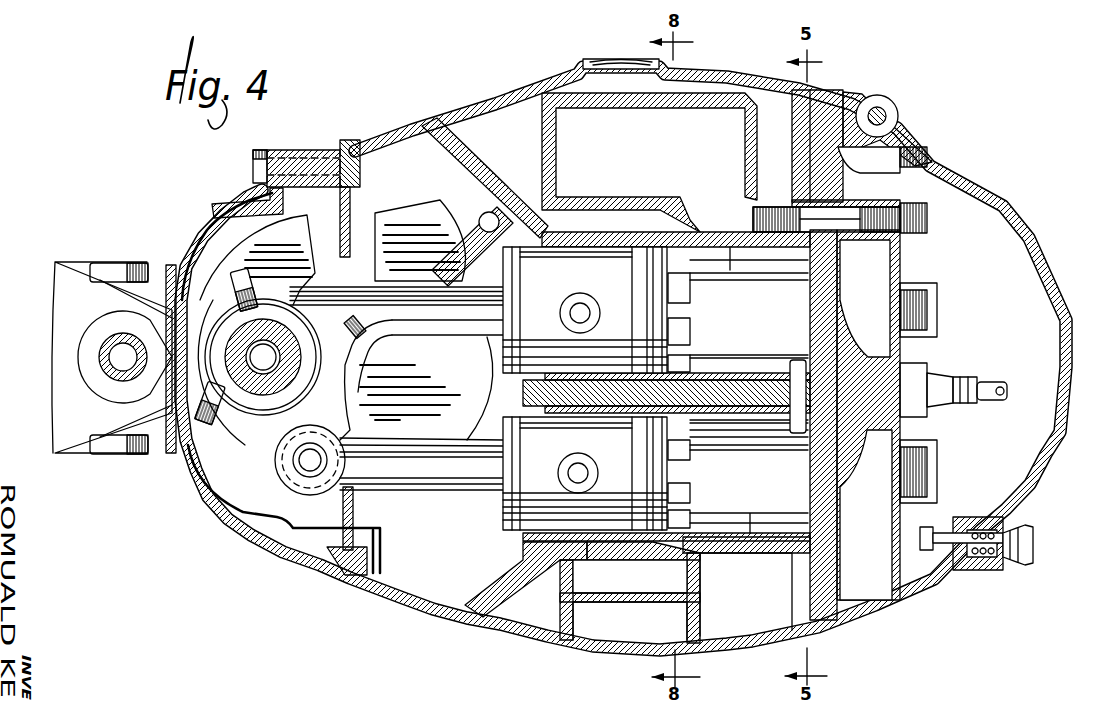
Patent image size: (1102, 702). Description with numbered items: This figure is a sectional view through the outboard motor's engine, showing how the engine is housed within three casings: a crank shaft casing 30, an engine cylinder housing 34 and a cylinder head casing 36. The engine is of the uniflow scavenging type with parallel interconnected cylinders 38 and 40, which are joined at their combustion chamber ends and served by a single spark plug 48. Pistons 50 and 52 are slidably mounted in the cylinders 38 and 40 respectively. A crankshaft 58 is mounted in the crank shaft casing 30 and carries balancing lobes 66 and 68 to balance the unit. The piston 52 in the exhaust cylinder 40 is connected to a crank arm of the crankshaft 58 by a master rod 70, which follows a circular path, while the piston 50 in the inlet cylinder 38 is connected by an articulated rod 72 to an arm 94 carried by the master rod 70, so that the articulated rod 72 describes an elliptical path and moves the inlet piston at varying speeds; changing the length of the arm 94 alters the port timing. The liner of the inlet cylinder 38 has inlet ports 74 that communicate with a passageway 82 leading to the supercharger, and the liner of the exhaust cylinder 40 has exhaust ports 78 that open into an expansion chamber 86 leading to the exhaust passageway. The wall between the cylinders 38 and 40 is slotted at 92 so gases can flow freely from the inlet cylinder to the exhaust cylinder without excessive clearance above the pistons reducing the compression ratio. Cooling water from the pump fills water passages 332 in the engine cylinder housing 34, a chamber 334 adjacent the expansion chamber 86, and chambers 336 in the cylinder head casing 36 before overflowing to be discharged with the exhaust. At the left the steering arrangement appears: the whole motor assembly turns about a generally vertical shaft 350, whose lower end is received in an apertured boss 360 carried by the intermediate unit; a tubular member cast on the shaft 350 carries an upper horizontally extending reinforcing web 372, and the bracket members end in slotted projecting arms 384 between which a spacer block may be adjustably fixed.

The crank shaft casing 30 is at (240, 520).
The engine cylinder housing 34 is at (537, 640).
The cylinder head casing 36 is at (880, 370).
The cylinder 38 is at (753, 517).
The cylinder 40 is at (733, 217).
The spark plug 48 is at (950, 375).
The piston 50 is at (533, 480).
The piston 52 is at (647, 310).
The crankshaft 58 is at (215, 430).
The balancing lobe 66 is at (408, 253).
The balancing lobe 68 is at (273, 237).
The master rod 70 is at (459, 312).
The articulated rod 72 is at (437, 465).
The inlet port 74 is at (682, 500).
The exhaust port 78 is at (682, 332).
The passageway 82 is at (610, 577).
The expansion chamber 86 is at (580, 137).
The slot 92 is at (798, 380).
The arm 94 is at (213, 492).
The water passage 332 is at (533, 600).
The chamber 334 is at (716, 92).
The chamber 336 is at (877, 280).
The shaft 350 is at (103, 357).
The apertured boss 360 is at (168, 300).
The reinforcing web 372 is at (78, 300).
The projecting arm 384 is at (118, 275).